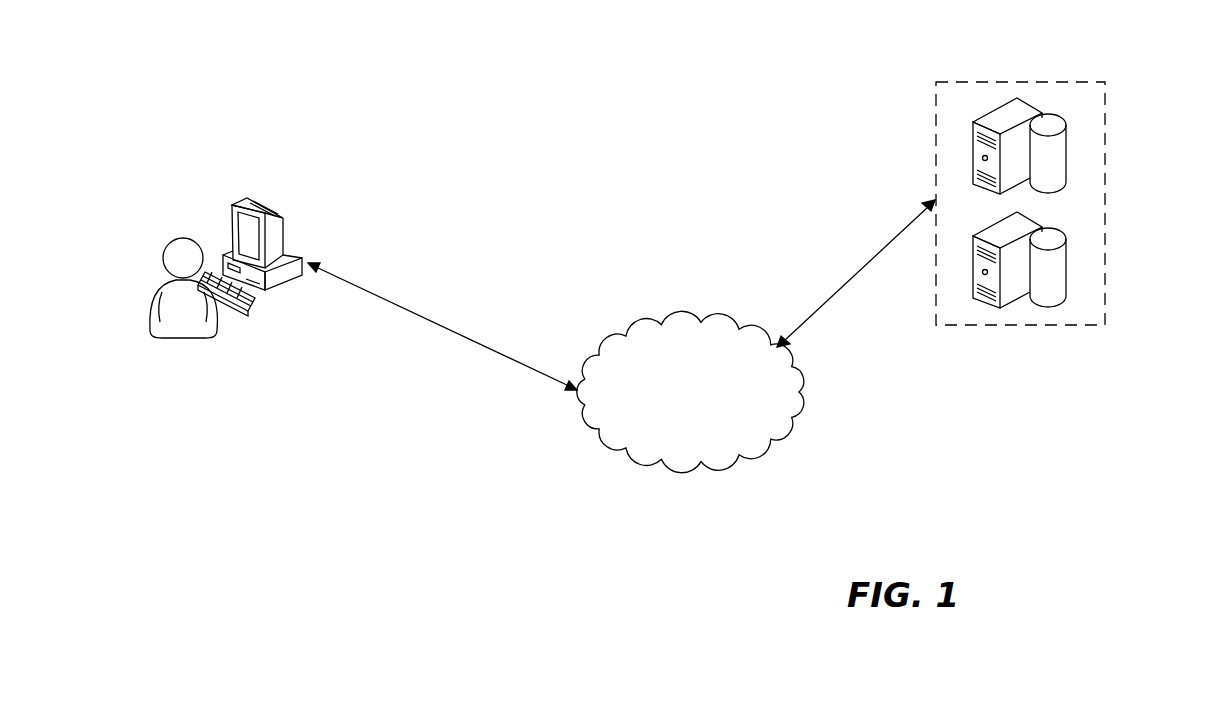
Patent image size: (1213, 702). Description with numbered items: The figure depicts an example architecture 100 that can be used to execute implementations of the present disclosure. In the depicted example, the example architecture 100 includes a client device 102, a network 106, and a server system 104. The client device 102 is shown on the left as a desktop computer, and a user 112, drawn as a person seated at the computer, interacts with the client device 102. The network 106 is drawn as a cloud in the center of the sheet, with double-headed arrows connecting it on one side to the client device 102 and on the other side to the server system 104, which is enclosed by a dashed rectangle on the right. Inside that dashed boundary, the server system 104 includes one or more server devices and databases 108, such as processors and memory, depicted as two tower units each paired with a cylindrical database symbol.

The example architecture 100 is at (538, 76).
The client device 102 is at (232, 205).
The server system 104 is at (1105, 203).
The network 106 is at (691, 319).
The server devices and databases 108 is at (973, 153).
The user 112 is at (183, 338).